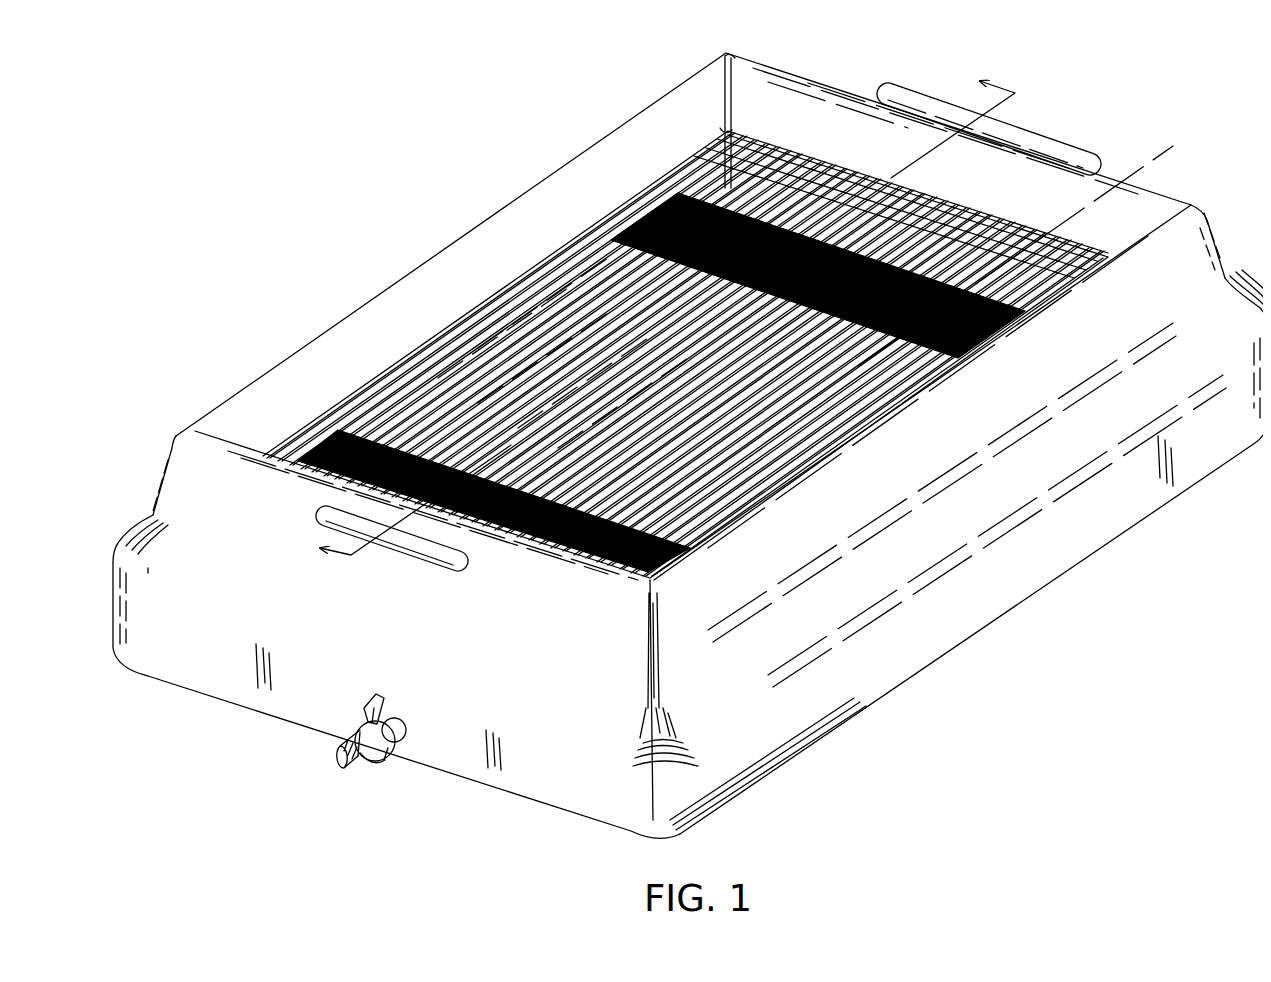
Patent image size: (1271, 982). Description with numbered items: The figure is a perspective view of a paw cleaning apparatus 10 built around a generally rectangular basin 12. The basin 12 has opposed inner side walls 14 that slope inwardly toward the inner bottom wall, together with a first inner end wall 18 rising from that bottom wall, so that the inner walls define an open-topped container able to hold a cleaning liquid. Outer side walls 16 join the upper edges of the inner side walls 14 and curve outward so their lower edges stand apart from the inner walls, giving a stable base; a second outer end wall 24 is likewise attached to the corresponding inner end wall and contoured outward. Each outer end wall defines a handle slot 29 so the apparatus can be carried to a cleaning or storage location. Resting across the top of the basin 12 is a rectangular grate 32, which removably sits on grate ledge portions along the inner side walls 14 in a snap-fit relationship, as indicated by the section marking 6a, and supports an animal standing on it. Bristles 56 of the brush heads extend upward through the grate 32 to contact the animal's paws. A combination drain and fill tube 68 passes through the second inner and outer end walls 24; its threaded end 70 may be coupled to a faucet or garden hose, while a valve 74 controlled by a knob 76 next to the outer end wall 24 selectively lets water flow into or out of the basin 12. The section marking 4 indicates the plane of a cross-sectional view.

The paw cleaning apparatus 10 is at (313, 118).
The basin 12 is at (193, 390).
The inner side walls 14 is at (297, 373).
The outer side walls 16 is at (963, 622).
The first inner end wall 18 is at (1127, 213).
The second outer end wall 24 is at (196, 678).
The handle slot 29 is at (897, 107).
The grate 32 is at (502, 287).
The bristles 56 is at (657, 200).
The section line 4- 4 is at (679, 331).
The corner post 6a is at (716, 118).
The combination drain and fill tube 68 is at (383, 718).
The threaded end 70 is at (353, 760).
The valve 74 is at (373, 753).
The knob 76 is at (353, 697).